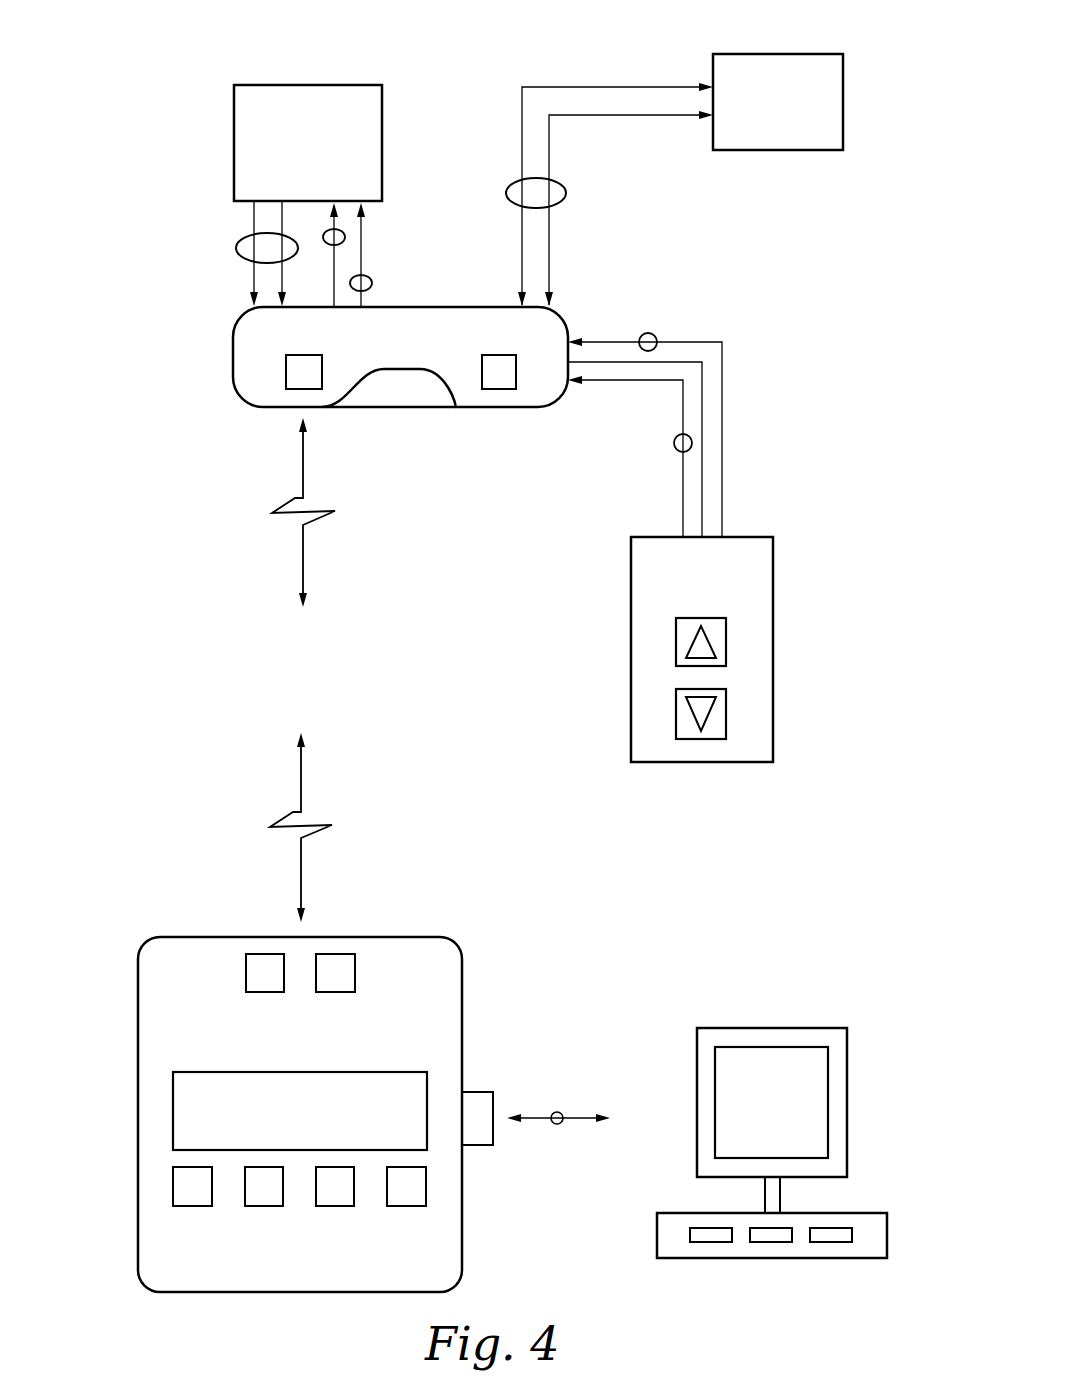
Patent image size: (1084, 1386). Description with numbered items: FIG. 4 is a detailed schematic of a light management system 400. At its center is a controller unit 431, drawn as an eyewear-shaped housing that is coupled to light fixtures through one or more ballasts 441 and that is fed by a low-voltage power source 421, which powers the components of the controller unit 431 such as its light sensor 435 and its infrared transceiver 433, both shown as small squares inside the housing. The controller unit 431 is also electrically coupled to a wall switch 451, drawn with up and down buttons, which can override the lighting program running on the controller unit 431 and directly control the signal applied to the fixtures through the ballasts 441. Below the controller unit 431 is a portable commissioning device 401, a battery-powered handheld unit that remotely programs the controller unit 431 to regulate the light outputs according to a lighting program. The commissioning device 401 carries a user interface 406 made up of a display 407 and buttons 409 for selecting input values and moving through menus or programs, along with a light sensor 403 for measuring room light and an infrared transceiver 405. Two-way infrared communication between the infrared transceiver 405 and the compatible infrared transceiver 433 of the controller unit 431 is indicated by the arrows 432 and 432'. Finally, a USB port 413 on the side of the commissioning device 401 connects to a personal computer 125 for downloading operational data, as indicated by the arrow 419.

The light management system 400 is at (160, 50).
The low-voltage power source 421 is at (234, 142).
The ballast 441 is at (772, 152).
The controller unit 431 is at (233, 355).
The infrared transceiver 433 is at (312, 389).
The light sensor 435 is at (498, 389).
The arrow 432 is at (265, 512).
The arrow 432' is at (259, 827).
The wall switch 451 is at (773, 672).
The portable commissioning device 401 is at (433, 940).
The light sensor 403 is at (246, 970).
The infrared transceiver 405 is at (334, 954).
The display 407 is at (173, 1103).
The buttons 409 is at (173, 1183).
The user interface 406 is at (240, 1219).
The USB port 413 is at (493, 1100).
The arrow 419 is at (557, 1125).
The personal computer 125 is at (882, 1000).